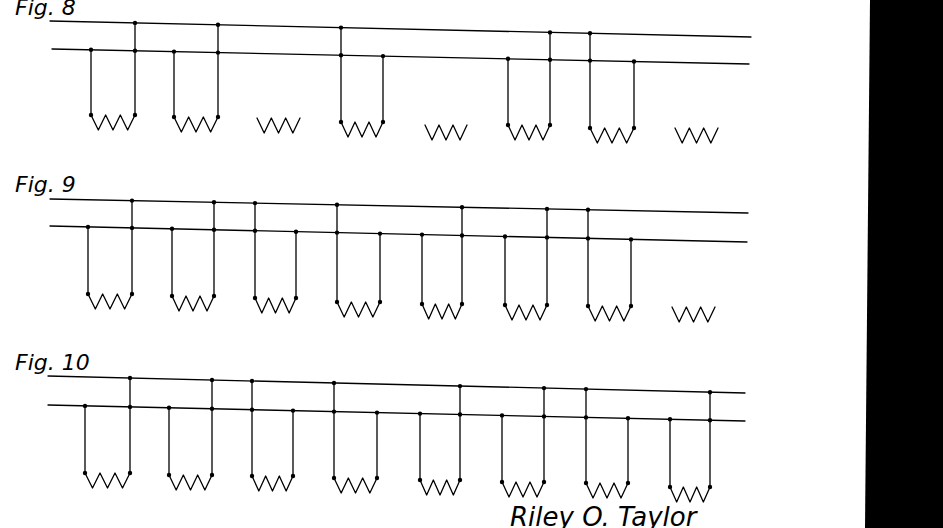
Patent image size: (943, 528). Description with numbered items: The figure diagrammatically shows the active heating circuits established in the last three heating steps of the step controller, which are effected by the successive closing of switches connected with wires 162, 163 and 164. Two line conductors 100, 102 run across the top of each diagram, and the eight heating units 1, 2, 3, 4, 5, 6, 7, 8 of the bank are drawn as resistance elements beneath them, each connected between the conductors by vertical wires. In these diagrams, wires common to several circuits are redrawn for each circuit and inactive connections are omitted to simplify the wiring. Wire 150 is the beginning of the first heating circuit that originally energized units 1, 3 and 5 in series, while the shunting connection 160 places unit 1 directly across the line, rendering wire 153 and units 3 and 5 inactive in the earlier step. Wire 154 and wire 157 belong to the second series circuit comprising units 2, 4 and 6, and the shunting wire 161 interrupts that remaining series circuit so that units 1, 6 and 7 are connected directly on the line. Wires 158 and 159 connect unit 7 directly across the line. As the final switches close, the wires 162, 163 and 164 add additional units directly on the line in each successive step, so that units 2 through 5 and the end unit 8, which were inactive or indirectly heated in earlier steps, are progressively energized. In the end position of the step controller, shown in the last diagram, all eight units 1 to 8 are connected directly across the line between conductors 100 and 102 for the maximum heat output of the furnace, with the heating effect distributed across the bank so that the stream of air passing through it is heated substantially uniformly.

In FIG. 8, the line conductor 100 is at (400, 21).
In FIG. 9, the line conductor 100 is at (399, 195).
In FIG. 10, the line conductor 100 is at (396, 374).
In FIG. 8, the line conductor 102 is at (400, 67).
In FIG. 9, the line conductor 102 is at (398, 210).
In FIG. 10, the line conductor 102 is at (396, 388).
In FIG. 8, the wire 150 is at (64, 83).
In FIG. 9, the wire 150 is at (60, 260).
In FIG. 10, the wire 150 is at (58, 440).
In FIG. 9, the wire 153 is at (444, 255).
In FIG. 10, the wire 153 is at (443, 433).
In FIG. 8, the wire 154 is at (159, 84).
In FIG. 9, the wire 154 is at (157, 263).
In FIG. 10, the wire 154 is at (153, 442).
In FIG. 8, the wire 157 is at (534, 78).
In FIG. 9, the wire 157 is at (529, 257).
In FIG. 10, the wire 157 is at (528, 435).
In FIG. 8, the wire 158 is at (656, 94).
In FIG. 9, the wire 158 is at (651, 272).
In FIG. 10, the wire 158 is at (649, 452).
In FIG. 8, the wire 159 is at (573, 80).
In FIG. 9, the wire 159 is at (571, 258).
In FIG. 10, the wire 159 is at (570, 436).
In FIG. 8, the shunting connection 160 is at (116, 69).
In FIG. 9, the shunting connection 160 is at (176, 249).
In FIG. 10, the shunting connection 160 is at (173, 427).
In FIG. 8, the shunting wire 161 is at (445, 90).
In FIG. 9, the shunting wire 161 is at (425, 269).
In FIG. 10, the shunting wire 161 is at (422, 447).
In FIG. 8, the wire 162 is at (279, 74).
In FIG. 9, the wire 162 is at (259, 252).
In FIG. 10, the wire 162 is at (255, 429).
In FIG. 9, the wire 163 is at (342, 268).
In FIG. 10, the wire 163 is at (339, 445).
In FIG. 10, the wire 164 is at (737, 439).
In FIG. 8, the heating unit 1 is at (113, 138).
In FIG. 9, the heating unit 1 is at (110, 317).
In FIG. 10, the heating unit 1 is at (107, 496).
In FIG. 8, the heating unit 2 is at (196, 140).
In FIG. 9, the heating unit 2 is at (193, 319).
In FIG. 10, the heating unit 2 is at (190, 498).
In FIG. 8, the heating unit 3 is at (278, 141).
In FIG. 9, the heating unit 3 is at (275, 321).
In FIG. 10, the heating unit 3 is at (272, 499).
In FIG. 8, the heating unit 4 is at (362, 145).
In FIG. 9, the heating unit 4 is at (358, 325).
In FIG. 10, the heating unit 4 is at (355, 501).
In FIG. 8, the heating unit 5 is at (446, 148).
In FIG. 9, the heating unit 5 is at (442, 327).
In FIG. 10, the heating unit 5 is at (440, 503).
In FIG. 8, the heating unit 6 is at (529, 148).
In FIG. 9, the heating unit 6 is at (526, 328).
In FIG. 10, the heating unit 6 is at (523, 476).
In FIG. 8, the heating unit 7 is at (612, 151).
In FIG. 9, the heating unit 7 is at (609, 329).
In FIG. 10, the heating unit 7 is at (607, 477).
In FIG. 8, the heating unit 8 is at (696, 151).
In FIG. 9, the heating unit 8 is at (693, 330).
In FIG. 10, the heating unit 8 is at (690, 482).